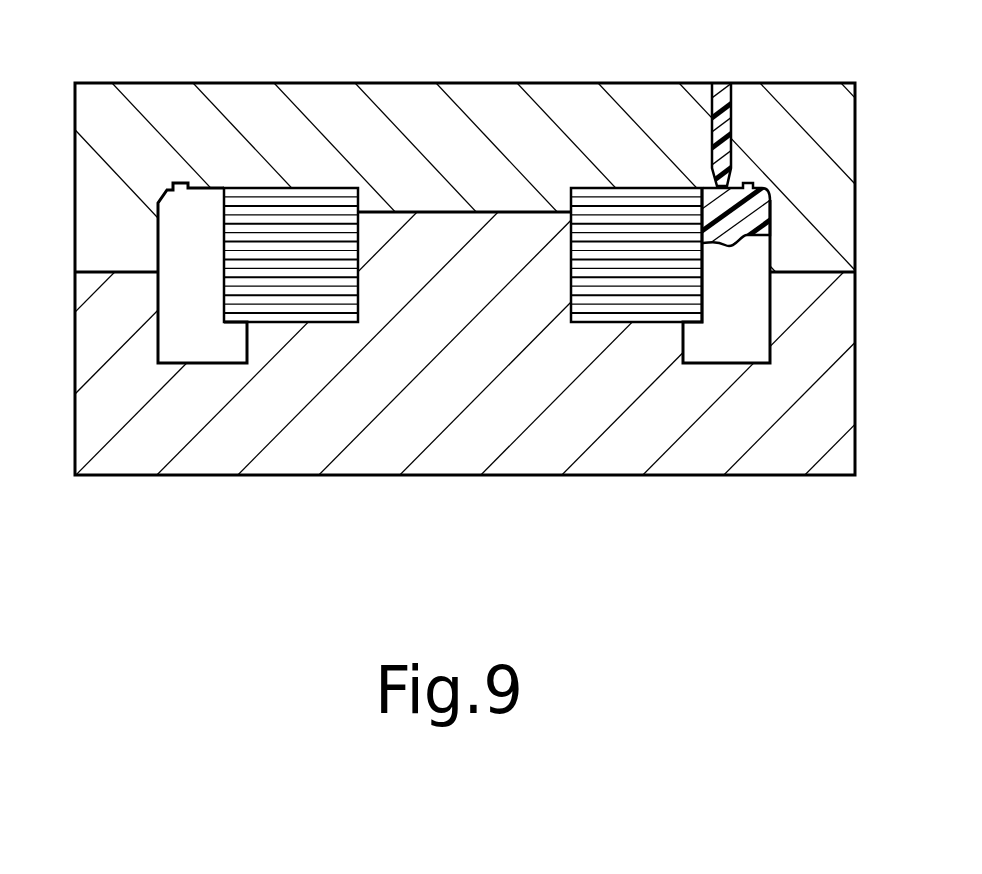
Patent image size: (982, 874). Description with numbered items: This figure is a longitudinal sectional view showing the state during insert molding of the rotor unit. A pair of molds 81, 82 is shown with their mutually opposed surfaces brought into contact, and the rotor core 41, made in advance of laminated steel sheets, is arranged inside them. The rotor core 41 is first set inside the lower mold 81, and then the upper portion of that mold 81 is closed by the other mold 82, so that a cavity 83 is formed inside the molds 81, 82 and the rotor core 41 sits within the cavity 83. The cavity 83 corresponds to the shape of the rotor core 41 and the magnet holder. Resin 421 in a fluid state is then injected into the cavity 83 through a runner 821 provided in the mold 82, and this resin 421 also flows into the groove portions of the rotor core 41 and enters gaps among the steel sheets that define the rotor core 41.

The rotor core 41 is at (307, 223).
The mold 82 is at (415, 115).
The runner 821 is at (712, 135).
The resin 421 is at (727, 222).
The cavity 83 is at (196, 320).
The mold 81 is at (390, 443).